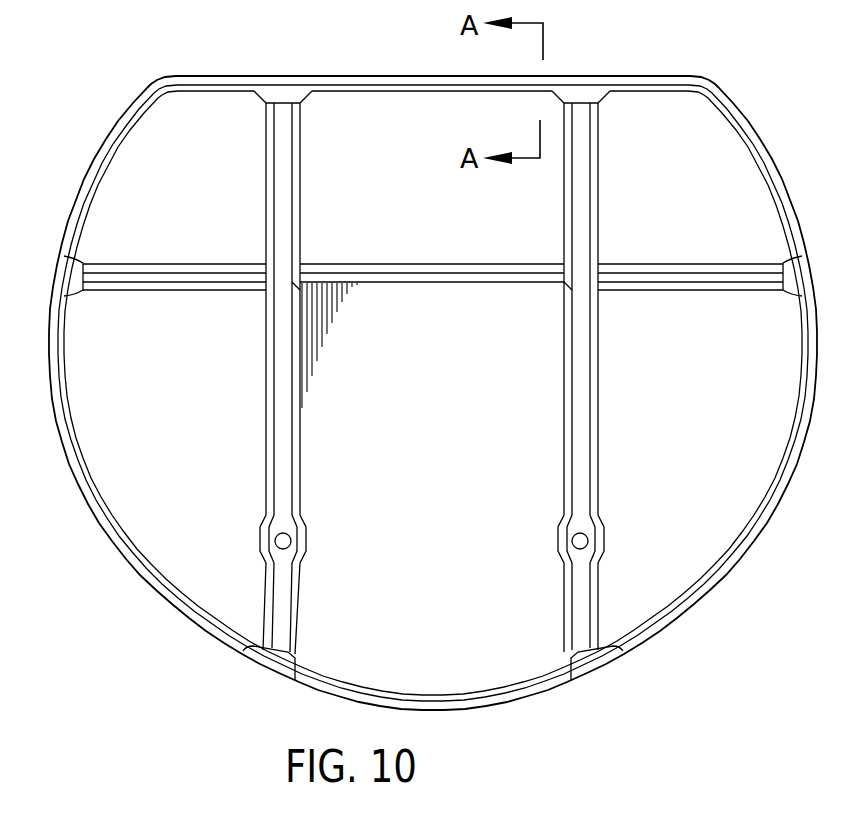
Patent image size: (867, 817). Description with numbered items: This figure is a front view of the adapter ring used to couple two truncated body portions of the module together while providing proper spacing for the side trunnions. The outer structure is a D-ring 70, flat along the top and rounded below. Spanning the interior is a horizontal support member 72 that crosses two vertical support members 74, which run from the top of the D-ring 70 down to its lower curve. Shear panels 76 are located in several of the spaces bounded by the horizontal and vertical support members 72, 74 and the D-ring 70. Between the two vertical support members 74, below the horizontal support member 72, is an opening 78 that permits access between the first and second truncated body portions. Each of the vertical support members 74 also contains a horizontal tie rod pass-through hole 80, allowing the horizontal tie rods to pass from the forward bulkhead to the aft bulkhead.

The D-ring 70 is at (218, 70).
The horizontal support member 72 is at (164, 259).
The vertical support members 74 is at (308, 225).
The shear panels 76 is at (220, 187).
The opening 78 is at (447, 399).
The horizontal tie rod pass-through holes 80 is at (595, 519).